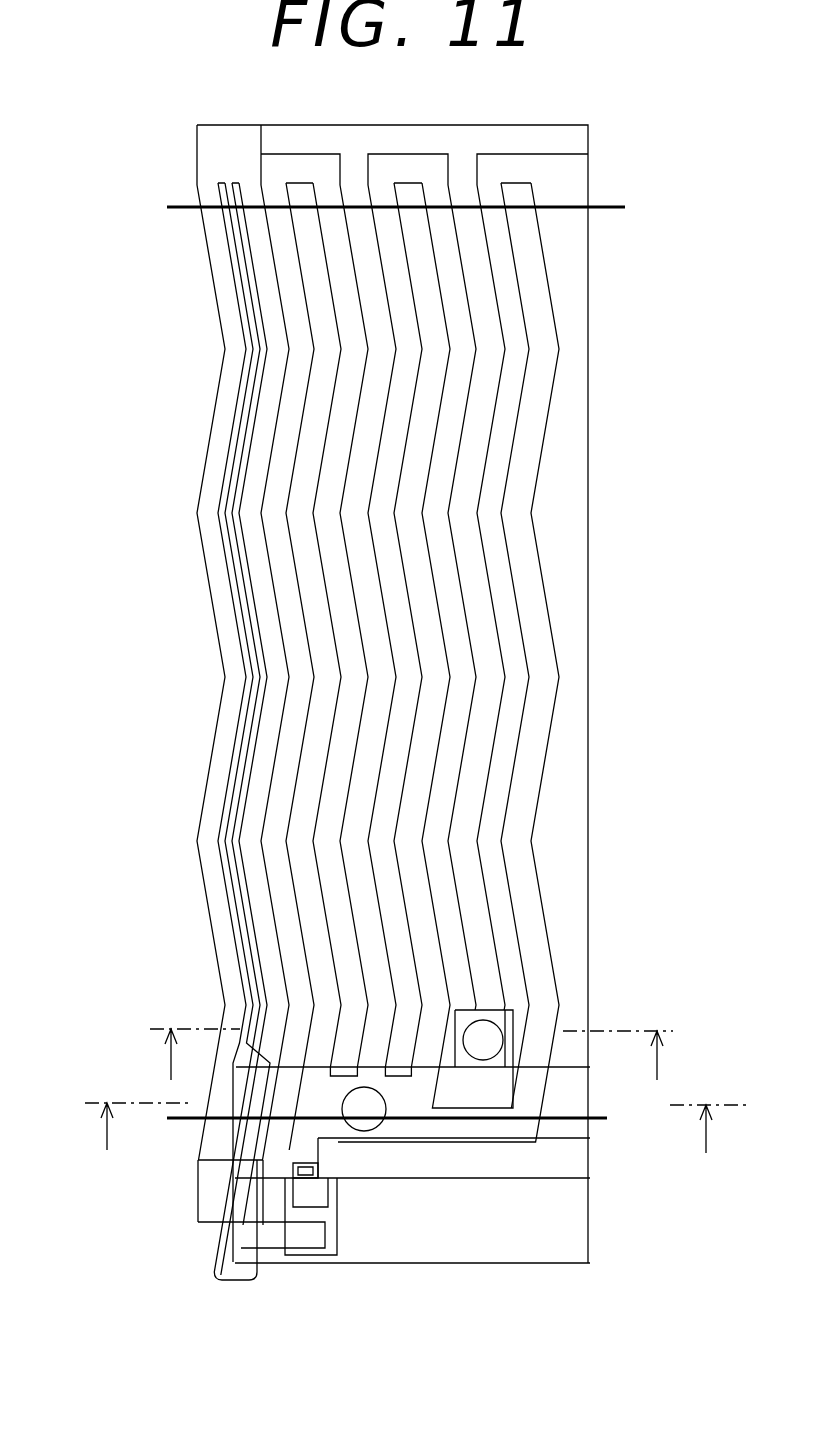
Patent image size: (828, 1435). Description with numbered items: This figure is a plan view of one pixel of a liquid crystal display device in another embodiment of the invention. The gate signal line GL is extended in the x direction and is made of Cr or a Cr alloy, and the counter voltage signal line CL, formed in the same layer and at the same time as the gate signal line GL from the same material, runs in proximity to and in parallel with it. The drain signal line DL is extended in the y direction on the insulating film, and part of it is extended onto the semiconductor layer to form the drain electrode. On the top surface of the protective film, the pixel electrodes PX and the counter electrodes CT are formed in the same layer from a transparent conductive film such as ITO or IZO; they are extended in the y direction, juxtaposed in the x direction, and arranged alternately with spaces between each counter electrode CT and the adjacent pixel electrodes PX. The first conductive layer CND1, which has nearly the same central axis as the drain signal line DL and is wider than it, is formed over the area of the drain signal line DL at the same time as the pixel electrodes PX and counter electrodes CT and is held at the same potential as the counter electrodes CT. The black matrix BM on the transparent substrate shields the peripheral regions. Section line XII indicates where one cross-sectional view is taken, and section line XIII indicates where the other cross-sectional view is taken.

The gate signal line GL is at (600, 95).
The black matrix BM is at (155, 100).
The drain signal line DL is at (244, 425).
The counter electrode CT is at (368, 584).
The pixel electrode PX is at (520, 533).
The first conductive layer CND1 is at (215, 739).
The counter voltage signal line CL is at (605, 1062).
The section line XII— XII is at (417, 1147).
The section line XIII— XIII is at (416, 1056).